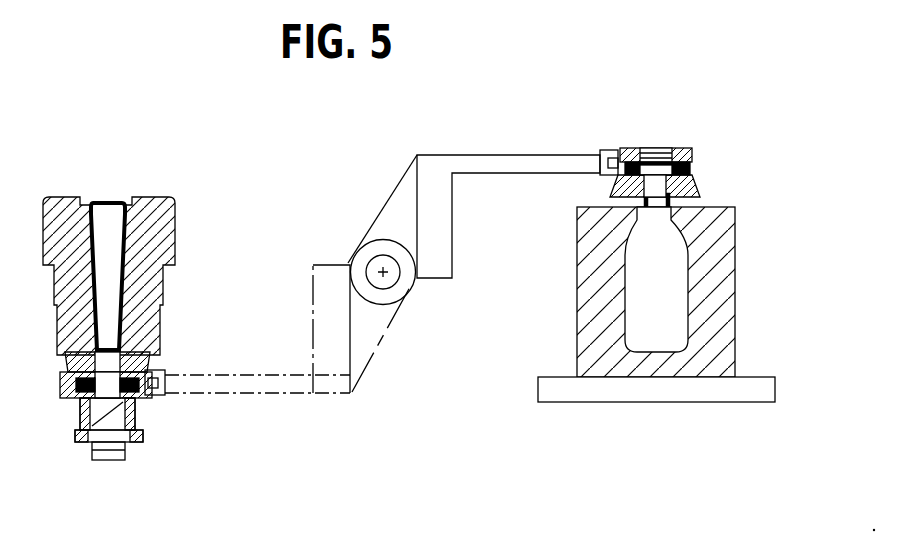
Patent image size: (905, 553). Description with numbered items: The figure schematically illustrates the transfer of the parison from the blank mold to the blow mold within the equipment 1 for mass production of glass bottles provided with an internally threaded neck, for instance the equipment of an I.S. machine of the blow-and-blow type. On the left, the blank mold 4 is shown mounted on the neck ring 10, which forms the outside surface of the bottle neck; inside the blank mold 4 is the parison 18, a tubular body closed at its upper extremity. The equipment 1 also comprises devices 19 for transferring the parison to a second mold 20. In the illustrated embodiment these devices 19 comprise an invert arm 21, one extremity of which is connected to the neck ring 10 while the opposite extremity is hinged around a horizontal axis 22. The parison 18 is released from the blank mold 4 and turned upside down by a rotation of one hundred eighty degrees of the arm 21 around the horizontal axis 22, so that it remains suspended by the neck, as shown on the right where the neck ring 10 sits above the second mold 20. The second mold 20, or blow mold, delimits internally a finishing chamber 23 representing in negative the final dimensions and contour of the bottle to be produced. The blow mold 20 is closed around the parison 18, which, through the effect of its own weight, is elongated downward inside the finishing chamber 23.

The equipment 1 is at (522, 446).
The blank mold 4 is at (177, 215).
The neck ring 10 is at (74, 393).
The parison 18 is at (100, 207).
The devices for transferring the parison 19 is at (347, 403).
The second mold 20 is at (724, 224).
The invert arm 21 is at (461, 152).
The horizontal axis 22 is at (385, 274).
The finishing chamber 23 is at (679, 304).